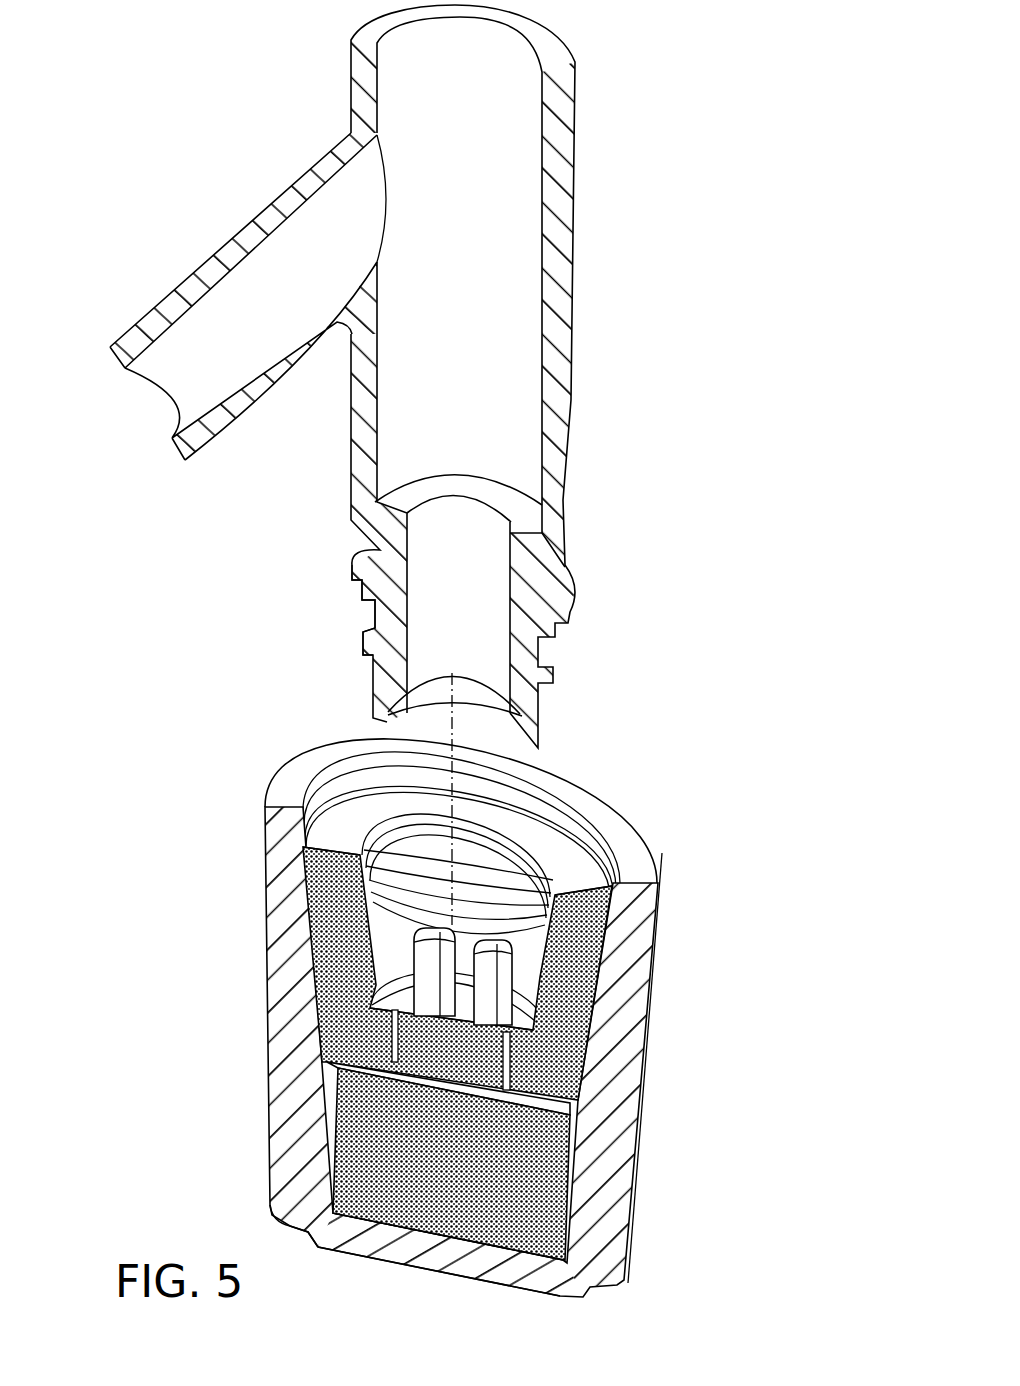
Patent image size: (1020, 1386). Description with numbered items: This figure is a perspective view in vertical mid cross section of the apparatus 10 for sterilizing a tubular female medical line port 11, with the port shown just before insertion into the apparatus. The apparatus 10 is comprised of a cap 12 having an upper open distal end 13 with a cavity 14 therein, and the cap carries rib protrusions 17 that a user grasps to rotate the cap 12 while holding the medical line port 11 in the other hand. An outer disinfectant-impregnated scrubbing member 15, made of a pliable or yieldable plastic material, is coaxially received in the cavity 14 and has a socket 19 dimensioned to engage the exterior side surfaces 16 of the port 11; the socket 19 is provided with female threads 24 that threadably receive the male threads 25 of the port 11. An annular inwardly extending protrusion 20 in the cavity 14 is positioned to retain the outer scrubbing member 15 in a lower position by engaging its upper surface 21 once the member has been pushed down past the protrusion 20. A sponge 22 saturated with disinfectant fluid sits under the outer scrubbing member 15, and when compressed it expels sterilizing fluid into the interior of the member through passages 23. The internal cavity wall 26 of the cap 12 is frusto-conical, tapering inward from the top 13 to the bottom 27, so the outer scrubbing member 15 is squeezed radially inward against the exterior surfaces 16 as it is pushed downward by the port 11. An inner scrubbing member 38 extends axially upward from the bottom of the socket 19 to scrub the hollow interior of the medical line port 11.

The apparatus 10 is at (692, 808).
The medical line port 11 is at (570, 240).
The cap 12 is at (465, 978).
The upper open distal end 13 is at (320, 772).
The cavity 14 is at (342, 805).
The outer disinfectant-impregnated scrubbing member 15 is at (588, 1060).
The exterior side surfaces 16 is at (548, 706).
The rib protrusions 17 is at (272, 1198).
The socket 19 is at (370, 893).
The annular inwardly extending protrusion 20 is at (597, 942).
The upper surface 21 is at (583, 857).
The sponge 22 is at (335, 1133).
The passages 23 is at (393, 1030).
The female threads 24 is at (552, 768).
The male threads 25 is at (357, 645).
The internal cavity wall 26 is at (350, 890).
The bottom 27 is at (520, 1224).
The inner scrubbing member 38 is at (577, 1038).